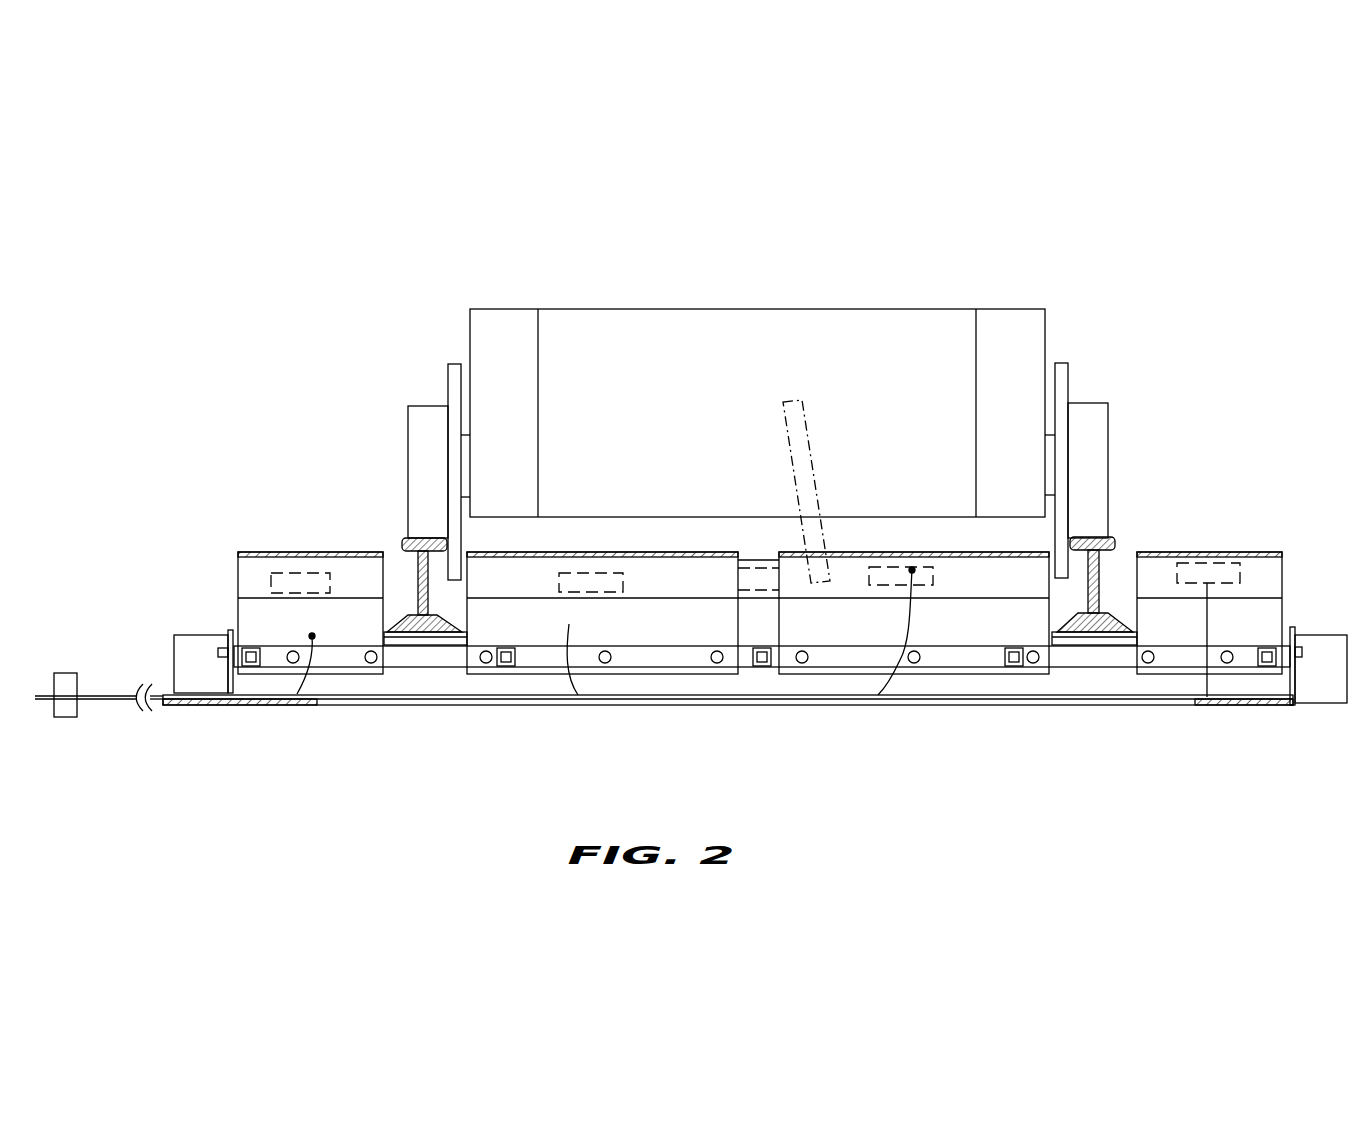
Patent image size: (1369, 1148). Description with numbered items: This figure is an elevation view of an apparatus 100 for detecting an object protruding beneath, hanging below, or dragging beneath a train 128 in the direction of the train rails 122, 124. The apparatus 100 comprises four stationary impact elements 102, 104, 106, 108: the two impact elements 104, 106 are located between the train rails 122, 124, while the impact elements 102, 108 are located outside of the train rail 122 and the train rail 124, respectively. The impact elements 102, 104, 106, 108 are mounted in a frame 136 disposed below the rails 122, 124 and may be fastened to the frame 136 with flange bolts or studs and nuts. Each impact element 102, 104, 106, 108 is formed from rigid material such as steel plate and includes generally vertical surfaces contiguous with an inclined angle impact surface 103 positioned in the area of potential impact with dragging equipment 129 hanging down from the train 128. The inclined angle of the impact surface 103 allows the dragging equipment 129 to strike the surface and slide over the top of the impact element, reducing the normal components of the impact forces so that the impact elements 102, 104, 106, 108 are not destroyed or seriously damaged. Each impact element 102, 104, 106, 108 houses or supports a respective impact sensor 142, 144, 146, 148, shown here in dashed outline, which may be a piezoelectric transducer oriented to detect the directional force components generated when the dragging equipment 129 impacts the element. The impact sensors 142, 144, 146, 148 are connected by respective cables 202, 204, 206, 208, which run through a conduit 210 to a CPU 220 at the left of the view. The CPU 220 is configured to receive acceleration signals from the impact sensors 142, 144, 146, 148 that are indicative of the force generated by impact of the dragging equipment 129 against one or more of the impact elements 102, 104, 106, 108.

The apparatus 100 is at (643, 218).
The stationary impact element 102 is at (253, 612).
The inclined angle impact surface 103 is at (259, 570).
The stationary impact element 104 is at (662, 610).
The stationary impact element 106 is at (955, 615).
The stationary impact element 108 is at (1172, 623).
The train rail 122 is at (403, 537).
The train rail 124 is at (1112, 538).
The train 128 is at (948, 270).
The dragging equipment 129 is at (790, 398).
The frame 136 is at (228, 630).
The impact sensor 142 is at (299, 573).
The impact sensor 144 is at (593, 573).
The impact sensor 146 is at (893, 577).
The impact sensor 148 is at (1217, 573).
The cable 202 is at (312, 636).
The cable 204 is at (573, 593).
The cable 206 is at (908, 622).
The cable 208 is at (1207, 617).
The conduit 210 is at (108, 700).
The CPU 220 is at (63, 713).